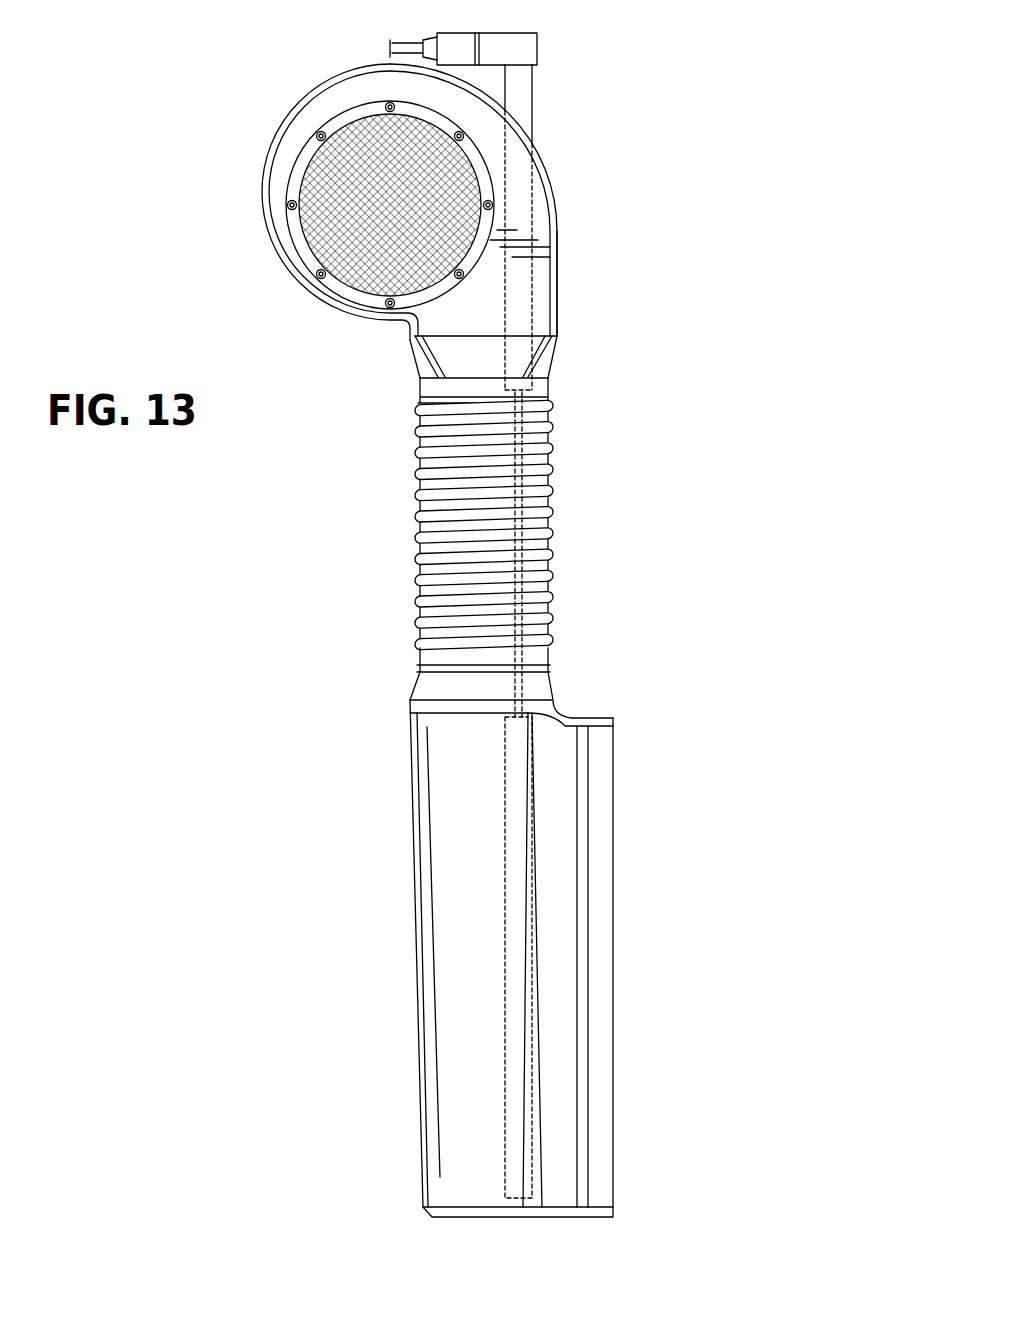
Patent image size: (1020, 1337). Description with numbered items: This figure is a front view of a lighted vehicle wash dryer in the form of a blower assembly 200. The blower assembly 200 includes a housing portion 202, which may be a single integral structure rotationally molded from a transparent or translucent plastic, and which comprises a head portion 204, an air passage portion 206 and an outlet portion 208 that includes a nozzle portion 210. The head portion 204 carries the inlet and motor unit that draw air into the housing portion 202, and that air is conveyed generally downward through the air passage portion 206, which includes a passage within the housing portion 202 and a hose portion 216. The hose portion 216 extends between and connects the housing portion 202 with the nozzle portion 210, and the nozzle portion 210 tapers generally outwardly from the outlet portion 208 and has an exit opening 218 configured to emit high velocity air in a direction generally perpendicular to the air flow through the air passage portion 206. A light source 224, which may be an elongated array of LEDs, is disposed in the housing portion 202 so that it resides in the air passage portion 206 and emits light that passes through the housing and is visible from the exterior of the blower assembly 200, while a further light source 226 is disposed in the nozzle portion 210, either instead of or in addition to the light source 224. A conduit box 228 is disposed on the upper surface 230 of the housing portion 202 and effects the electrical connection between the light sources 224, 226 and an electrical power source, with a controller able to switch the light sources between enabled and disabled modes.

The blower assembly 200 is at (578, 181).
The housing portion 202 is at (328, 88).
The head portion 204 is at (370, 72).
The air passage portion 206 is at (558, 396).
The outlet portion 208 is at (570, 691).
The nozzle portion 210 is at (532, 762).
The hose portion 216 is at (552, 530).
The exit opening 218 is at (613, 1016).
The light source 224 is at (553, 160).
The light source 226 is at (503, 972).
The conduit box 228 is at (523, 52).
The upper surface 230 is at (475, 82).